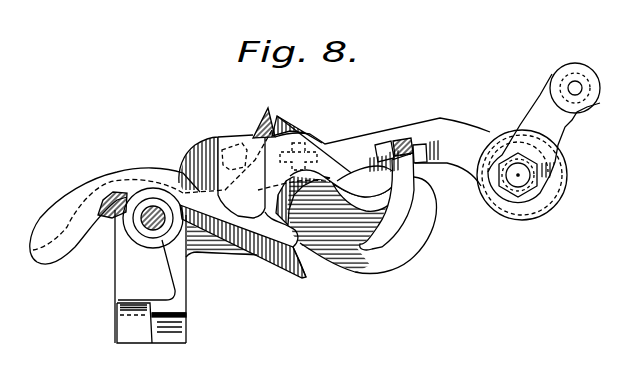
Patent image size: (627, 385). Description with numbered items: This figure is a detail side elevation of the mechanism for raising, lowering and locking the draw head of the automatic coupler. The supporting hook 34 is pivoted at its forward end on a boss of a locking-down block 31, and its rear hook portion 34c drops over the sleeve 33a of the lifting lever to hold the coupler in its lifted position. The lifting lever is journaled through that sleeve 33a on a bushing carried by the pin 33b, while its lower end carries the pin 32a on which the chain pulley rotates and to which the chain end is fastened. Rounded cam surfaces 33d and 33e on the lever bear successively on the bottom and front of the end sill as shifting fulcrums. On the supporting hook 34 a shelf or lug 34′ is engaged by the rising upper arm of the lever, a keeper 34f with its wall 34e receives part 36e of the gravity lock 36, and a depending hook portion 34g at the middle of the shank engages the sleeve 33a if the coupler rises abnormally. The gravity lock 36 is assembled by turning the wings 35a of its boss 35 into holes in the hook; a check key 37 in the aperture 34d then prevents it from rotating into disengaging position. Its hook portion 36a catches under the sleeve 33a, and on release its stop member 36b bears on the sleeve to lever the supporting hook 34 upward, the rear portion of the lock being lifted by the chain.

The locking-down block 31 is at (540, 118).
The pin 32a is at (137, 228).
The sleeve 33a is at (150, 247).
The pin 33b is at (147, 225).
The rounded cam surface 33d is at (335, 182).
The rounded cam surface 33e is at (437, 198).
The supporting hook 34 is at (373, 171).
The shelf or lug 34′ is at (230, 148).
The hook portion 34c is at (292, 272).
The aperture 34d is at (402, 140).
The wall 34e is at (263, 130).
The keeper 34f is at (227, 174).
The depending hook portion 34g is at (398, 222).
The boss 35 is at (298, 152).
The wings 35a is at (300, 148).
The gravity lock 36 is at (145, 175).
The hook portion 36a is at (277, 237).
The stop member 36b is at (362, 182).
The part of gravity lock 36e is at (280, 127).
The check key 37 is at (381, 145).